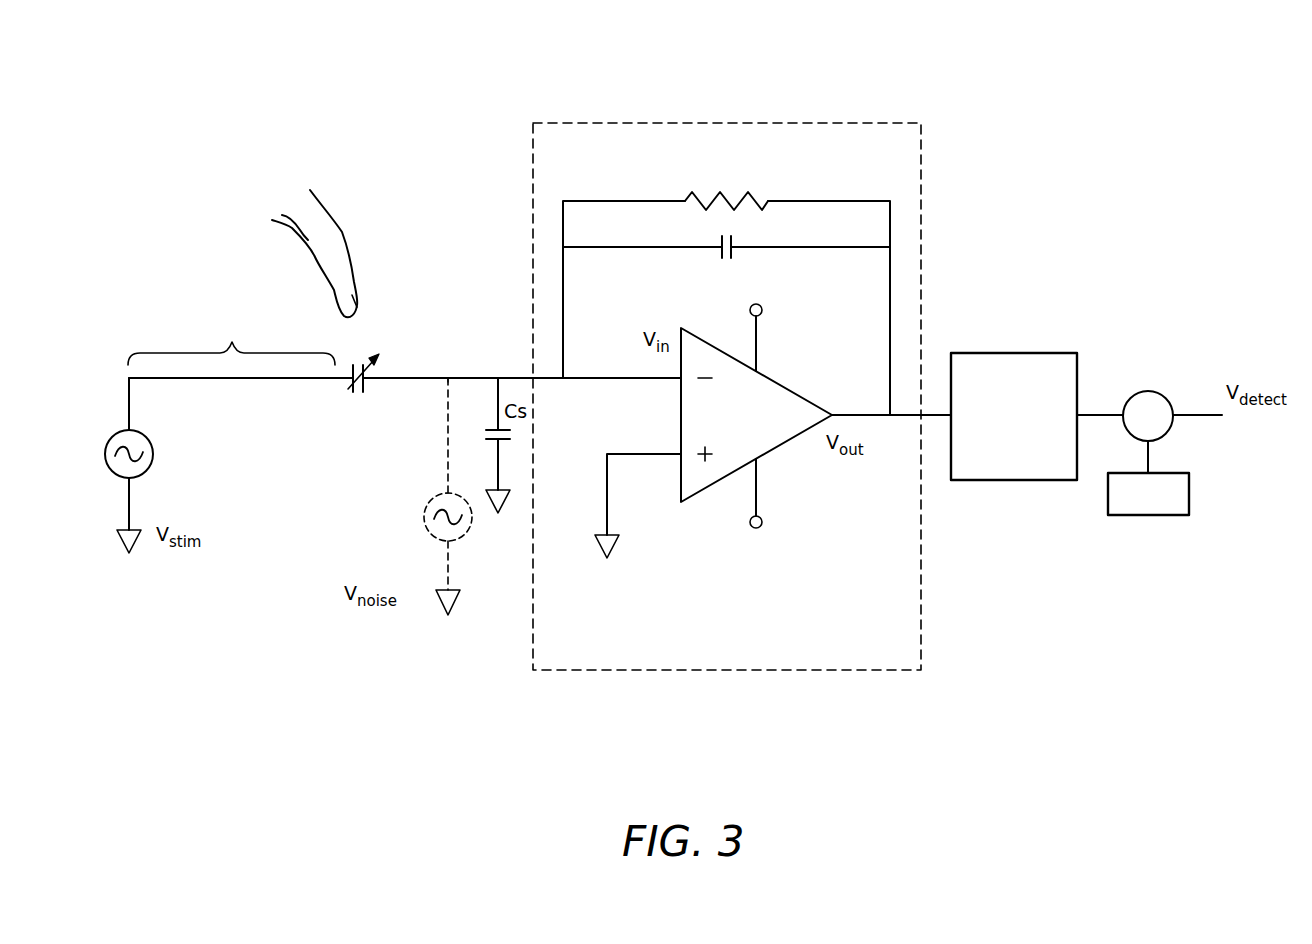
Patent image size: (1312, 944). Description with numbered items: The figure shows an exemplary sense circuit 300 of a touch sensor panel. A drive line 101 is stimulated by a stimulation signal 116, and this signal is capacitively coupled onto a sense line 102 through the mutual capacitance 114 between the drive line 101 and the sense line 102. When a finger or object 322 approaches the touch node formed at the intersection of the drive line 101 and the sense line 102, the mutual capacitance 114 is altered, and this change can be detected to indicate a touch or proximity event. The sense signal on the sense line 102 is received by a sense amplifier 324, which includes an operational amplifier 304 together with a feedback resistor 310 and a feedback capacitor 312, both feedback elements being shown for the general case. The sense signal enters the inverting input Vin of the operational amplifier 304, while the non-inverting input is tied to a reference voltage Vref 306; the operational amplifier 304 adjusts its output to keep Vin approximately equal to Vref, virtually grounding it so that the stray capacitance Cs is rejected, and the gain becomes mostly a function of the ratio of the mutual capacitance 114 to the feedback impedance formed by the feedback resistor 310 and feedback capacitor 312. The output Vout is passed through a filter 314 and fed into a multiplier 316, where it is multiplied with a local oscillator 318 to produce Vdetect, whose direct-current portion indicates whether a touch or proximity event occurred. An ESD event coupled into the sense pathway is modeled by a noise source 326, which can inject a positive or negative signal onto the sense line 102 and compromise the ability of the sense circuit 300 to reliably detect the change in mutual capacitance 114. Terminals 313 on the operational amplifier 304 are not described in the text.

The sense circuit 300 is at (243, 156).
The drive line 101 is at (231, 339).
The sense line 102 is at (448, 341).
The mutual capacitance 114 is at (356, 398).
The stimulation signal 116 is at (154, 455).
The finger or object 322 is at (342, 232).
The noise source 326 is at (422, 514).
The sense amplifier 324 is at (726, 670).
The feedback resistor 310 is at (727, 195).
The feedback capacitor 312 is at (727, 262).
The operational amplifier 304 is at (680, 414).
The reference voltage Vref 306 is at (607, 558).
The power supply terminals 313 is at (758, 345).
The filter 314 is at (1013, 353).
The multiplier 316 is at (1148, 391).
The local oscillator 318 is at (1148, 515).